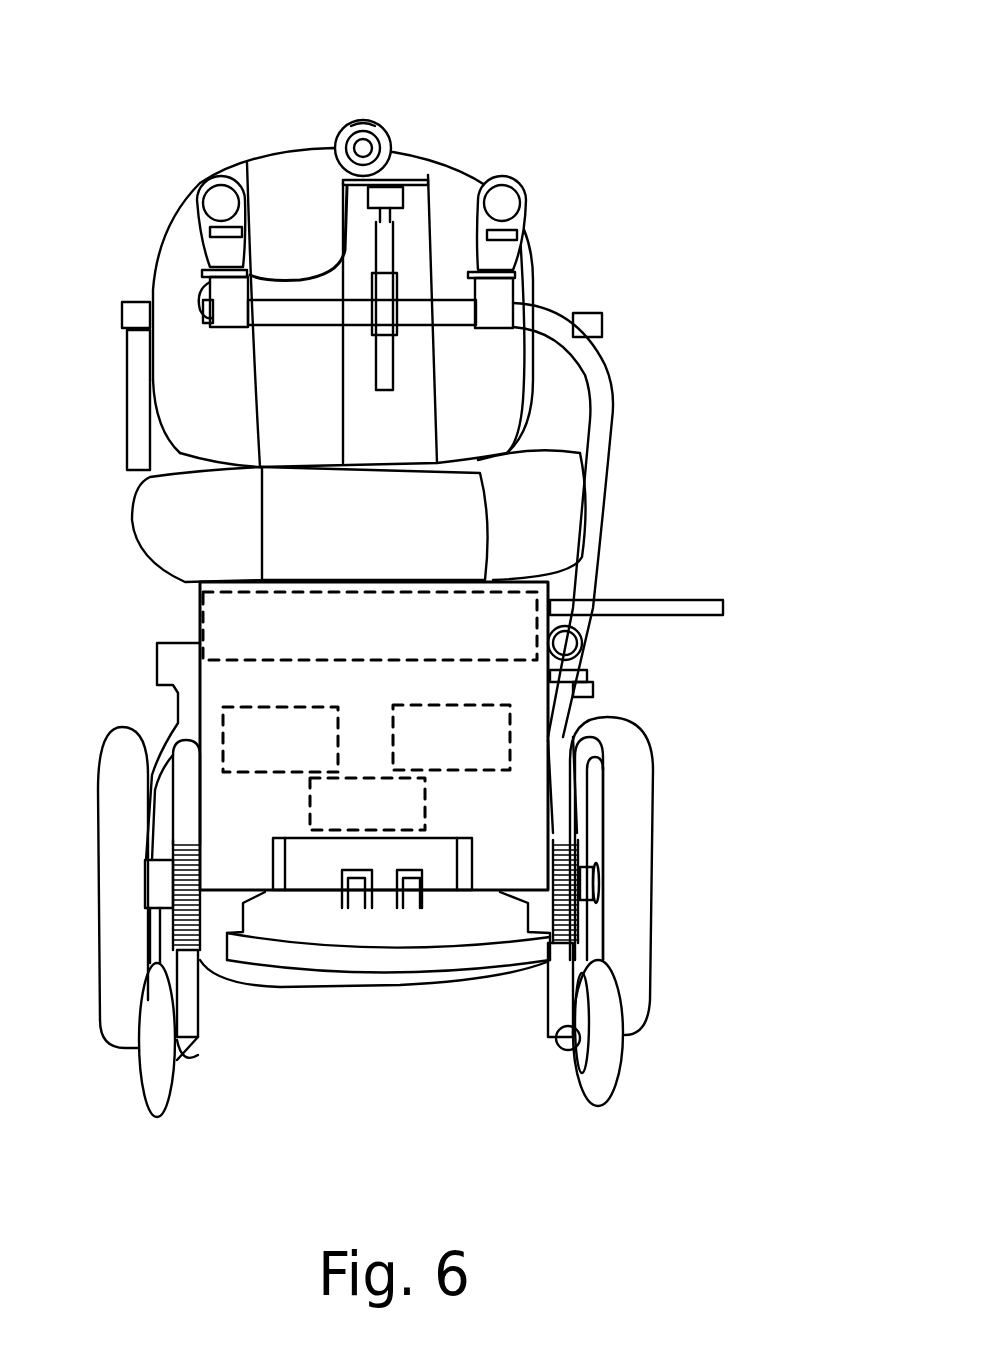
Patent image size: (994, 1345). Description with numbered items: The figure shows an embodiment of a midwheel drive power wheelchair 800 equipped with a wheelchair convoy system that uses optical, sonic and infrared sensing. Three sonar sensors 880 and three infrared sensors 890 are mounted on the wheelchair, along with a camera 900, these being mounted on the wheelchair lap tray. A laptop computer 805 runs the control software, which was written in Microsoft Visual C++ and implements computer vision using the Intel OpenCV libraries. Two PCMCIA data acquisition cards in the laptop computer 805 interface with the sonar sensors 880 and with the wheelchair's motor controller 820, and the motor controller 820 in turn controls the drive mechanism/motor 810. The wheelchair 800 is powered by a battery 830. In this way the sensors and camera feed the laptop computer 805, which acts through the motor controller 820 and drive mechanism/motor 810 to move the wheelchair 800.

The midwheel drive power wheelchair 800 is at (438, 123).
The camera 900 is at (340, 117).
The sonar sensor 880 is at (203, 182).
The infrared sensor 890 is at (210, 228).
The laptop computer 805 is at (402, 641).
The drive mechanism/motor 810 is at (305, 754).
The motor controller 820 is at (472, 753).
The battery 830 is at (397, 823).